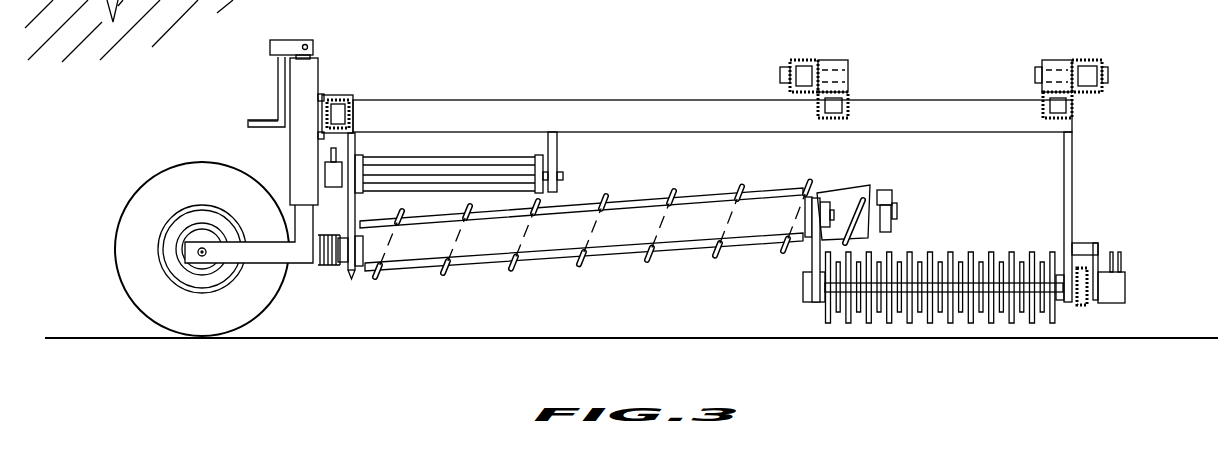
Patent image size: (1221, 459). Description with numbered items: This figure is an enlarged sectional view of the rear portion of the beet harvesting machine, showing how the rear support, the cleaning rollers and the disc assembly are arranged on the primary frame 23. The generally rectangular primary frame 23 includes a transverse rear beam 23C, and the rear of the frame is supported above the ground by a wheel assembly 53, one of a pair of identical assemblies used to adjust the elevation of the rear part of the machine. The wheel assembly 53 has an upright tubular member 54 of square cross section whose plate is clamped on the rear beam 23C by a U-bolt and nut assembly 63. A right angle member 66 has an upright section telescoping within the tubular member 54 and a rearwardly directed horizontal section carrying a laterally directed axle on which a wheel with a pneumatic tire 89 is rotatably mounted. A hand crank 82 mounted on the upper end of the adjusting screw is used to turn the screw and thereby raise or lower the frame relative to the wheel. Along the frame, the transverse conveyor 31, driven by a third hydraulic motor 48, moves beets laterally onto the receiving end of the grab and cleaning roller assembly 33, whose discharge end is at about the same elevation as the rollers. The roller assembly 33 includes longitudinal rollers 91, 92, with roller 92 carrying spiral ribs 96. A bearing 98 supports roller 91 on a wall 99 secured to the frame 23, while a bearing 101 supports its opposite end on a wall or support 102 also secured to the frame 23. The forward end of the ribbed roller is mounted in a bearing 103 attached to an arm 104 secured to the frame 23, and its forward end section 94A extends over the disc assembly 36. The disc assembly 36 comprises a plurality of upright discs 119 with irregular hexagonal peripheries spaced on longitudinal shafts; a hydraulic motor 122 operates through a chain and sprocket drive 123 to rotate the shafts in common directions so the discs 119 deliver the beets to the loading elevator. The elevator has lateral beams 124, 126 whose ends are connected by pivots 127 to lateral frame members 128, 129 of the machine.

The primary frame 23 is at (686, 96).
The rear beam 23C is at (352, 112).
The transverse conveyor 31 is at (480, 155).
The grab and cleaning roller assembly 33 is at (585, 230).
The disc assembly 36 is at (1003, 233).
The third hydraulic motor 48 is at (333, 172).
The wheel assembly 53 is at (235, 124).
The upright tubular member 54 is at (312, 68).
The U-bolt and nut assembly 63 is at (333, 95).
The right angle member 66 is at (272, 263).
The hand crank 82 is at (278, 75).
The pneumatic tire 89 is at (148, 186).
The roller 91 is at (470, 258).
The roller 92 is at (540, 262).
The forward end section 94A is at (848, 190).
The spiral ribs 96 is at (612, 205).
The bearing 98 is at (352, 273).
The wall 99 is at (351, 276).
The bearing 101 is at (805, 243).
The wall or support 102 is at (813, 262).
The bearing 103 is at (892, 203).
The arm 104 is at (880, 191).
The discs 119 is at (1035, 323).
The hydraulic motor 122 is at (1122, 280).
The chain and sprocket drive 123 is at (1087, 303).
The lateral beam 124 is at (800, 60).
The lateral beam 126 is at (1085, 60).
The pivots 127 is at (780, 74).
The lateral frame member 128 is at (838, 86).
The lateral frame member 129 is at (1043, 93).